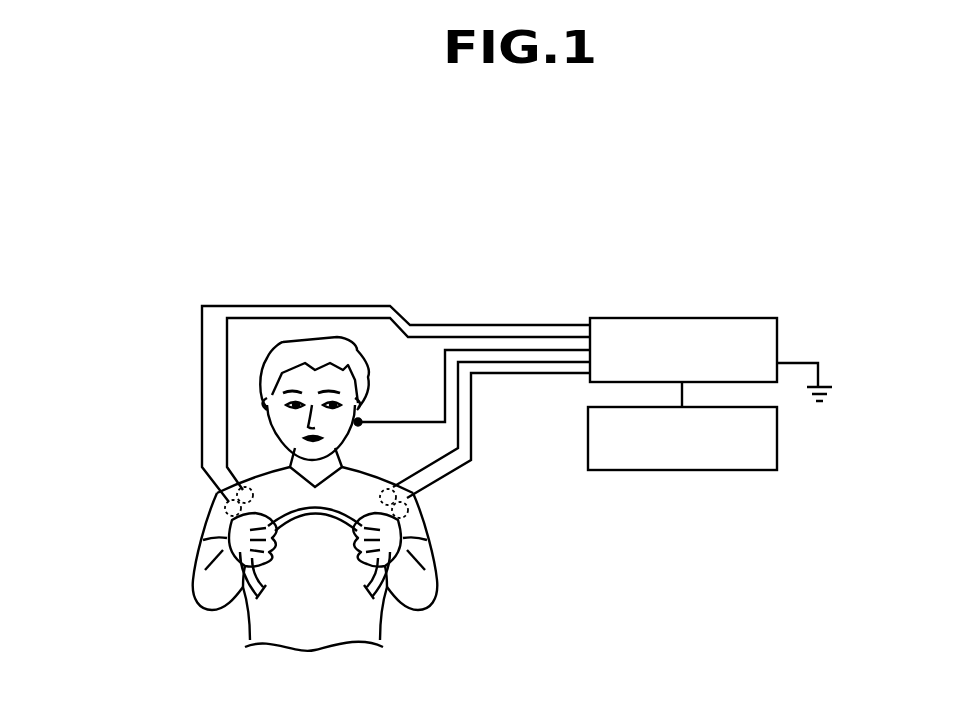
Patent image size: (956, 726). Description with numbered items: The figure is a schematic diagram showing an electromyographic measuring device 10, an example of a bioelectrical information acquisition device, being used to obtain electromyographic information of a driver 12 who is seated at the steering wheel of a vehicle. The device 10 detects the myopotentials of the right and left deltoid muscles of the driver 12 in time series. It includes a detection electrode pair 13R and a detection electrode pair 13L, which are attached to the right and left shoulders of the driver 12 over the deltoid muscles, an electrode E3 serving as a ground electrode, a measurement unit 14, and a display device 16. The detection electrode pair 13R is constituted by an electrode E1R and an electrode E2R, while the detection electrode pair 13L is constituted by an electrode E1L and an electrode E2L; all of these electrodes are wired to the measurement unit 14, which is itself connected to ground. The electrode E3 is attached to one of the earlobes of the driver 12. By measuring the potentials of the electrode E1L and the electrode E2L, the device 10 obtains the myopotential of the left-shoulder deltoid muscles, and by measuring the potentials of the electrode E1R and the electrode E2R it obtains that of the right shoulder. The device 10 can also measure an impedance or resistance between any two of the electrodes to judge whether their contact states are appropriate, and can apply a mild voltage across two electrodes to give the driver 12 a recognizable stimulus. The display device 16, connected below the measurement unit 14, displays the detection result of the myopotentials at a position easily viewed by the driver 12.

The electromyographic measuring device 10 is at (630, 247).
The driver 12 is at (408, 638).
The detection electrode pair 13R is at (135, 486).
The detection electrode pair 13L is at (497, 507).
The measurement unit 14 is at (757, 317).
The display device 16 is at (760, 472).
The electrode E1R is at (232, 502).
The electrode E2R is at (243, 487).
The electrode E1L is at (406, 507).
The electrode E2L is at (392, 489).
The electrode E3 is at (362, 419).